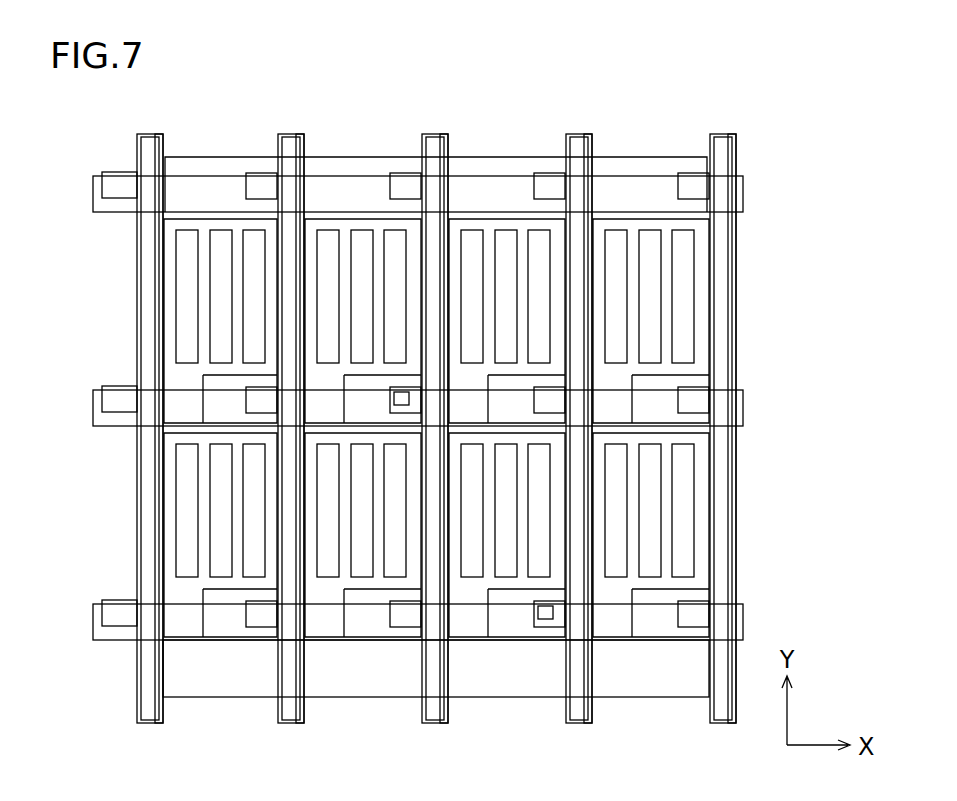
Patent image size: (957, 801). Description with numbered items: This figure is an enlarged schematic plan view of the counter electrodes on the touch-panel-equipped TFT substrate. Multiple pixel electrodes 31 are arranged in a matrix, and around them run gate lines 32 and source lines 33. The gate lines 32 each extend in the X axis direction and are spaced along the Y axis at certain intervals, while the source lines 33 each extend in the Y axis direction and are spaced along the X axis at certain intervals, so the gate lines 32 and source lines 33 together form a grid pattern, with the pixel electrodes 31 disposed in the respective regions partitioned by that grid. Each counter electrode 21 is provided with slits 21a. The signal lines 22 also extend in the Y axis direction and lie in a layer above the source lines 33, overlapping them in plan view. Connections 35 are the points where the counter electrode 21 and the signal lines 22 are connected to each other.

The counter electrode 21 is at (235, 157).
The slits 21a is at (178, 277).
The signal lines 22 is at (160, 138).
The pixel electrodes 31 is at (162, 318).
The gate lines 32 is at (744, 193).
The source lines 33 is at (148, 138).
The connections 35 is at (401, 407).